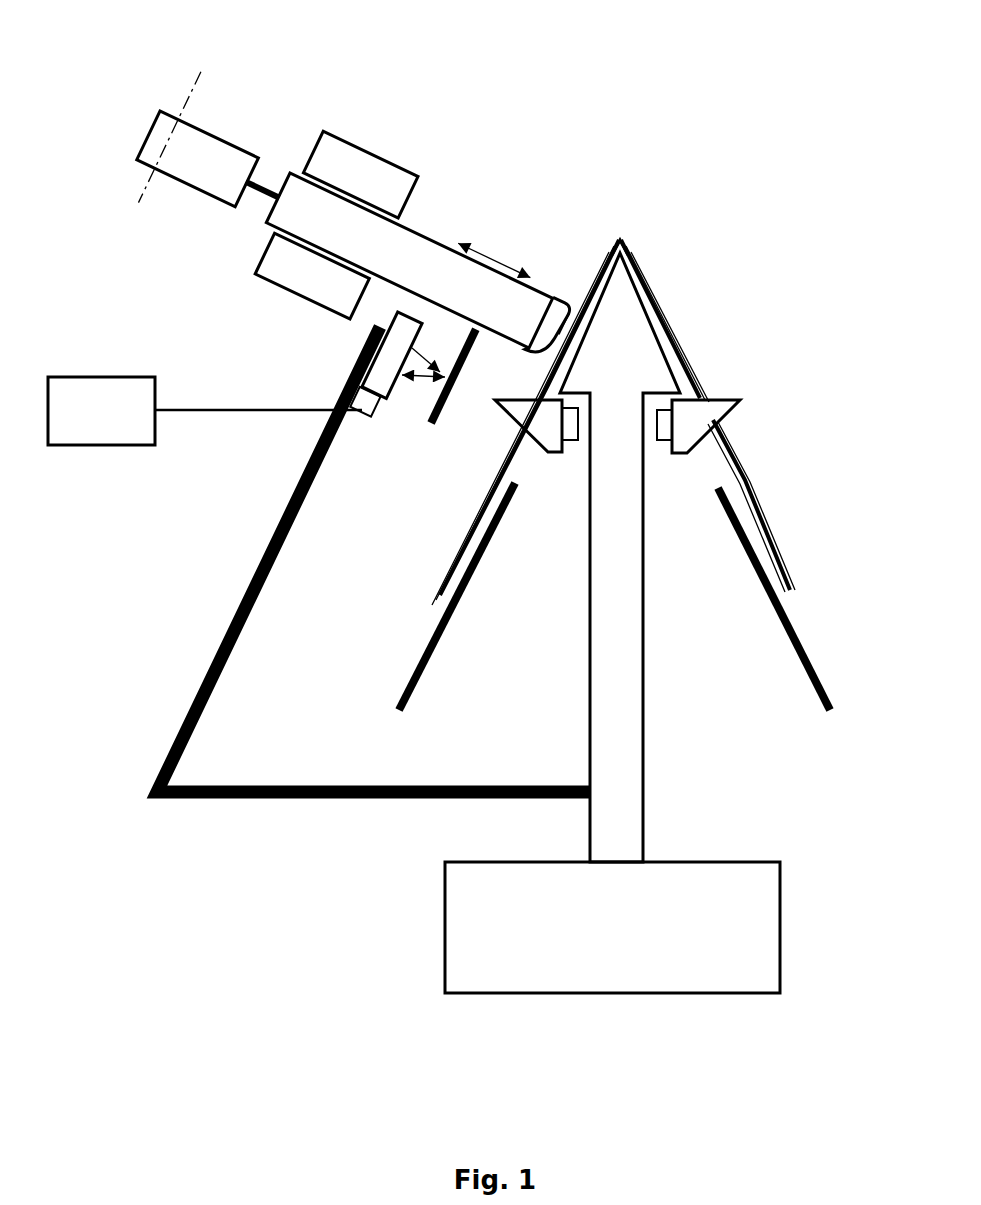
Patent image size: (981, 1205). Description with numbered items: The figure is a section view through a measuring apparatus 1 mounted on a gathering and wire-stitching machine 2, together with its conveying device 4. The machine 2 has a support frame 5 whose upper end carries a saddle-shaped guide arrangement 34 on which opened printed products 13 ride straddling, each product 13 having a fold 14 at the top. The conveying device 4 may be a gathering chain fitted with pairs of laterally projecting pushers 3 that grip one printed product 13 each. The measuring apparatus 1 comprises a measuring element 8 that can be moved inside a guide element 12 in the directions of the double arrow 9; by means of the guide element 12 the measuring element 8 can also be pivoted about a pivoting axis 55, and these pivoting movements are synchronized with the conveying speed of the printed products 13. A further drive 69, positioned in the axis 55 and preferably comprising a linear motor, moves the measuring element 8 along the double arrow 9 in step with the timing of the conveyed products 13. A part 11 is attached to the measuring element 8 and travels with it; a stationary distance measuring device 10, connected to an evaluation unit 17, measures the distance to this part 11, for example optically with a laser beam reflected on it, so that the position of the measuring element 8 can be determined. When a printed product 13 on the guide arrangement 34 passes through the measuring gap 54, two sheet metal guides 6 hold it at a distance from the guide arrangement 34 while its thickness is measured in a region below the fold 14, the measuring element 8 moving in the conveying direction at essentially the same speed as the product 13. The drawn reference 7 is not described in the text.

The measuring apparatus 1 is at (503, 185).
The gathering and wire-stitching machine 2 is at (763, 122).
The pushers 3 is at (543, 430).
The conveying device 4 is at (752, 343).
The support frame 5 is at (622, 755).
The sheet metal guides 6 is at (422, 653).
The laser unit 7 is at (400, 128).
The measuring element 8 is at (435, 273).
The double arrow 9 is at (502, 260).
The distance measuring device 10 is at (383, 400).
The part 11 is at (448, 408).
The guide element 12 is at (355, 140).
The printed products 13 is at (770, 527).
The fold 14 is at (620, 243).
The evaluation unit 17 is at (102, 397).
The saddle-shaped guide arrangement 34 is at (628, 335).
The measuring gap 54 is at (573, 317).
The pivoting axis 55 is at (198, 85).
The drive 69 is at (190, 168).